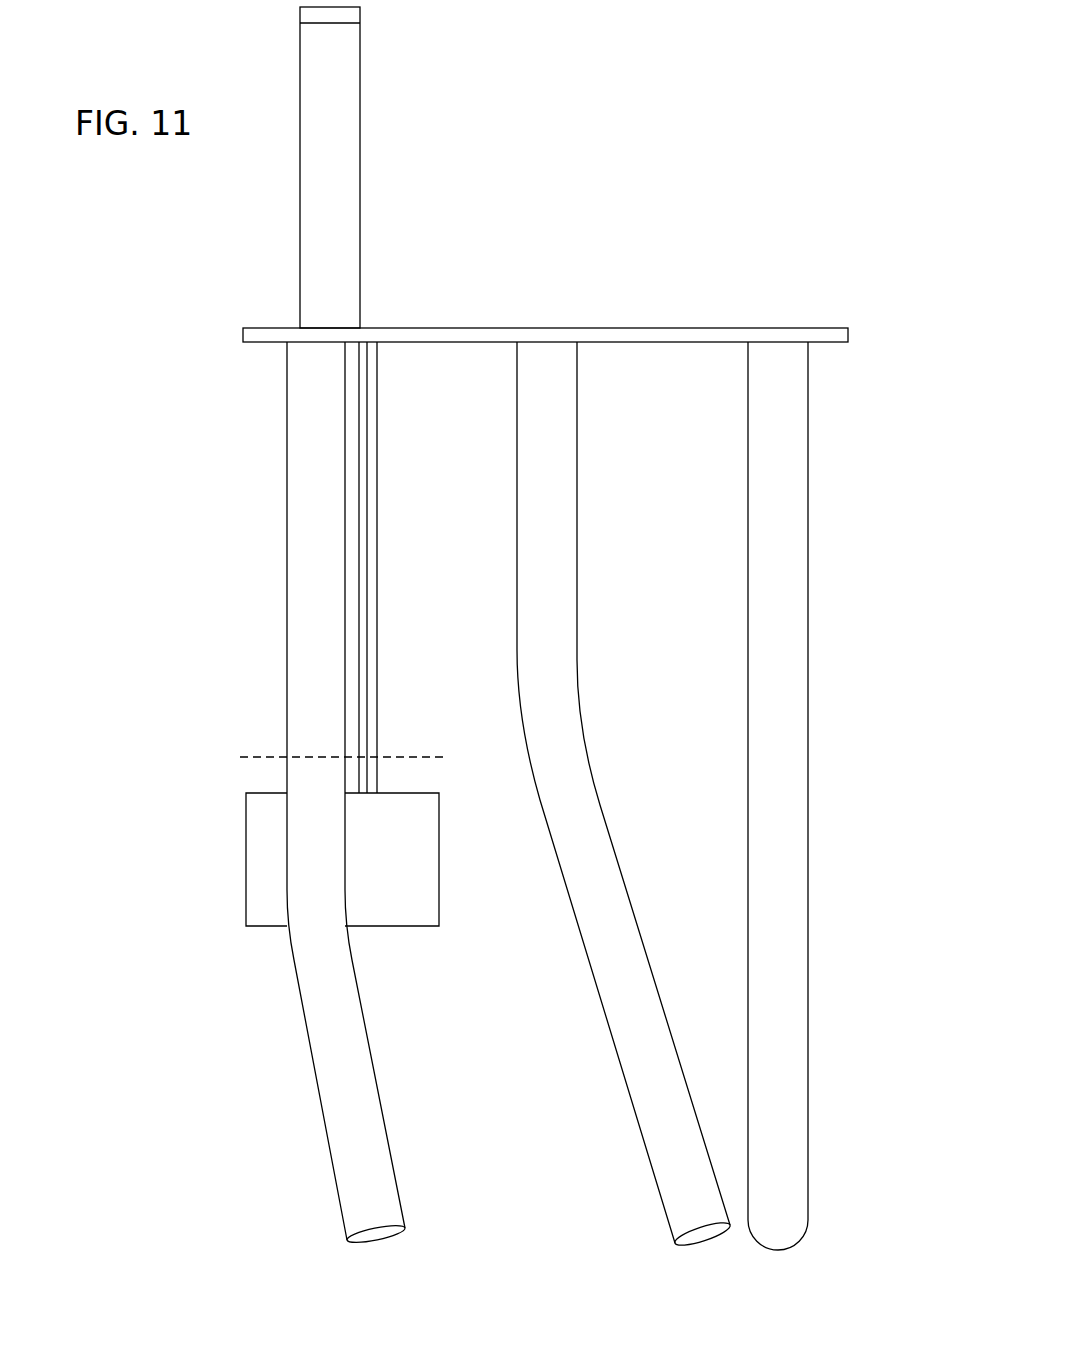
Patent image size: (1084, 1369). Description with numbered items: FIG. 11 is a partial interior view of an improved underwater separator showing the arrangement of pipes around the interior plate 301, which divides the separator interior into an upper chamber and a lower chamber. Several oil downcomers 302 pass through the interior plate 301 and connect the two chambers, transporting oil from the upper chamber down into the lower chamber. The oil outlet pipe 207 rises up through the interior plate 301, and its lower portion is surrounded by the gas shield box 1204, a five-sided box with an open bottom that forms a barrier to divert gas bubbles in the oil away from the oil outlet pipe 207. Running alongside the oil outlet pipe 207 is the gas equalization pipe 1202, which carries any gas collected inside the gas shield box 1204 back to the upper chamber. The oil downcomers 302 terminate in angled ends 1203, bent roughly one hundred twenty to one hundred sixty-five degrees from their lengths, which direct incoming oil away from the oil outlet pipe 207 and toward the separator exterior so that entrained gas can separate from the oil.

The oil outlet pipe 207 is at (300, 7).
The interior plate 301 is at (848, 338).
The oil downcomers 302 is at (296, 562).
The gas equalization pipe 1202 is at (372, 562).
The angled ends 1203 is at (780, 1198).
The gas shield box 1204 is at (278, 893).